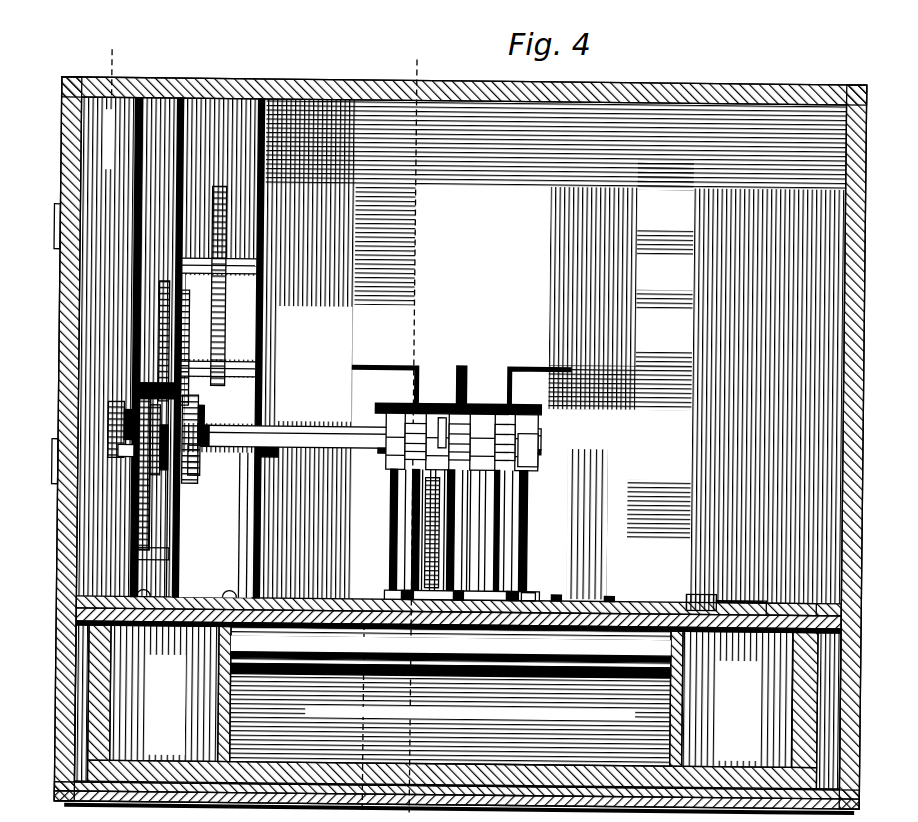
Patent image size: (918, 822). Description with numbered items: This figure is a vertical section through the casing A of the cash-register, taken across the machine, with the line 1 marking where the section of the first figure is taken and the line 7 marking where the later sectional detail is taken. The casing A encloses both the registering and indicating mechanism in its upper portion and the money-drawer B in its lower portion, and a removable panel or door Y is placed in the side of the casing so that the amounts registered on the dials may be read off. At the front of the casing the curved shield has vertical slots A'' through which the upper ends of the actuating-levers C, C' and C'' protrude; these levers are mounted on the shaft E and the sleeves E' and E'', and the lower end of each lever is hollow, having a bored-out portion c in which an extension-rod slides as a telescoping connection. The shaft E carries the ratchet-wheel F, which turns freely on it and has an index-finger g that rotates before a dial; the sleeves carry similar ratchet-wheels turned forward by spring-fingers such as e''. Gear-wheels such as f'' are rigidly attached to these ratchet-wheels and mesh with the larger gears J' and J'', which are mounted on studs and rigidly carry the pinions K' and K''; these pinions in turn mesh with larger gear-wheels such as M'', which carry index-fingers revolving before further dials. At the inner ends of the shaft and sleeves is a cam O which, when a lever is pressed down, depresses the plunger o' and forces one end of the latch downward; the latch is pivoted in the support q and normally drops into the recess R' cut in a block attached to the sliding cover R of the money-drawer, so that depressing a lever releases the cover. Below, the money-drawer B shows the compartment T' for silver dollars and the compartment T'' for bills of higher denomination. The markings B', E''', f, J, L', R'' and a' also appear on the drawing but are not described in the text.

The section line 1 1 is at (235, 427).
The section line 7 7 is at (411, 431).
The casing A is at (141, 347).
The vertical slots A'' is at (160, 347).
The money-drawer B is at (457, 446).
The casing top wall B' is at (463, 106).
The actuating-lever C is at (540, 376).
The actuating-lever C' is at (472, 370).
The actuating-lever C'' is at (384, 370).
The shaft E is at (327, 446).
The sleeve E' is at (207, 463).
The sleeve E'' is at (275, 464).
The main shaft E''' is at (371, 425).
The ratchet-wheel F is at (106, 453).
The rod f is at (131, 485).
The gear-wheel f'' is at (194, 460).
The index-finger g is at (116, 412).
The block J is at (122, 461).
The larger gear J' is at (166, 472).
The larger gear J'' is at (222, 343).
The pinion K' is at (181, 458).
The pinion K'' is at (215, 438).
The drum L' is at (458, 428).
The larger gear-wheel M'' is at (257, 286).
The cam O is at (415, 419).
The sliding cover R is at (793, 600).
The recess R' is at (717, 595).
The lever arm R'' is at (755, 597).
The compartment T' is at (453, 696).
The compartment T'' is at (450, 697).
The removable panel or door Y is at (70, 318).
The stop a' is at (532, 584).
The longitudinally-bored-out portion c is at (400, 530).
The spring-finger e'' is at (210, 423).
The plunger o' is at (462, 533).
The support q is at (550, 587).